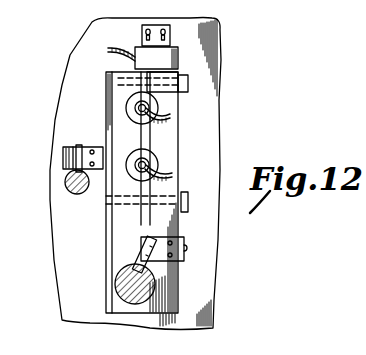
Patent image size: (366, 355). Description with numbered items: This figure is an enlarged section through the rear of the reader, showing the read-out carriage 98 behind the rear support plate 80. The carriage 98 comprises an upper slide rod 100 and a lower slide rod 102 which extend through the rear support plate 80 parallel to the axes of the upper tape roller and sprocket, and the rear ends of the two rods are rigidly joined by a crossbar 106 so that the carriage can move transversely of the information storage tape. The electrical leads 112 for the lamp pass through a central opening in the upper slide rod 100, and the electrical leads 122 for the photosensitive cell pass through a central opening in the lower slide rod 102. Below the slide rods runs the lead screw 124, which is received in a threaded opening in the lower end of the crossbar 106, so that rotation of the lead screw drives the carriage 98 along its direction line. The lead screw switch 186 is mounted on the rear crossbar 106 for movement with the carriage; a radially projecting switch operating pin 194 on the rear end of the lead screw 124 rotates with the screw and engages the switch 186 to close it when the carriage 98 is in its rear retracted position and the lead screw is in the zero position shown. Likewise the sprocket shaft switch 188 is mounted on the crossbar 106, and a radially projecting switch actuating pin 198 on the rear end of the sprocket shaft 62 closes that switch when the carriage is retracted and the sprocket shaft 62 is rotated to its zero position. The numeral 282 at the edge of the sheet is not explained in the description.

The rear support plate 80 is at (218, 42).
The carriage 98 is at (186, 138).
The upper slide rod 100 is at (157, 102).
The crossbar 106 is at (160, 164).
The lower slide rod 102 is at (172, 177).
The electrical leads 112 is at (178, 118).
The electrical leads 122 is at (188, 196).
The lead screw switch 186 is at (187, 231).
The switch operating pin 194 is at (142, 255).
The lead screw 124 is at (149, 293).
The sprocket shaft switch 188 is at (96, 134).
The switch actuating pin 198 is at (66, 156).
The sprocket shaft 62 is at (75, 194).
The reference from adjacent figure 282 is at (40, 0).